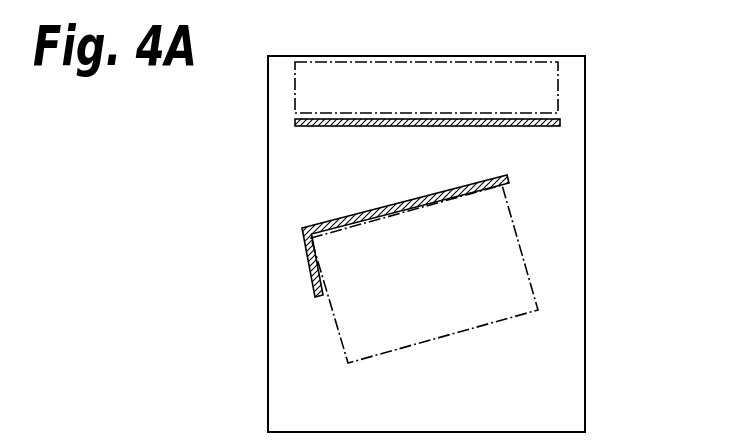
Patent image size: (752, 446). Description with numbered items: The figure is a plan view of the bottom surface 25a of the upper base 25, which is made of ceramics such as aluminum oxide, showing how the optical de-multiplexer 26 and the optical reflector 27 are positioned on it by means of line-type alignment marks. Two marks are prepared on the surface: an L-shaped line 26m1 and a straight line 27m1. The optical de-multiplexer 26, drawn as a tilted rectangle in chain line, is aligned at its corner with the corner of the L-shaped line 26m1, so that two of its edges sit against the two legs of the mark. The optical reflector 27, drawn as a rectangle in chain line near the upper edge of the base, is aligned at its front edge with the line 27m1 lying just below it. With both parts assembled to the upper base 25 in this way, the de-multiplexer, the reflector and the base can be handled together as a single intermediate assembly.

The upper base 25 is at (585, 310).
The bottom surface of upper base 25a is at (558, 373).
The optical de-multiplexer 26 is at (520, 245).
The L-shaped line 26m1 is at (300, 232).
The optical reflector 27 is at (558, 88).
The line 27m1 is at (300, 128).